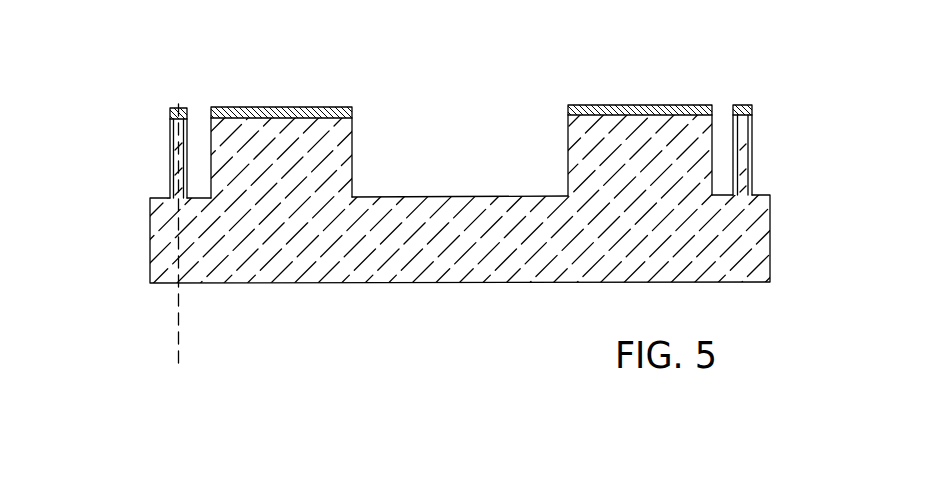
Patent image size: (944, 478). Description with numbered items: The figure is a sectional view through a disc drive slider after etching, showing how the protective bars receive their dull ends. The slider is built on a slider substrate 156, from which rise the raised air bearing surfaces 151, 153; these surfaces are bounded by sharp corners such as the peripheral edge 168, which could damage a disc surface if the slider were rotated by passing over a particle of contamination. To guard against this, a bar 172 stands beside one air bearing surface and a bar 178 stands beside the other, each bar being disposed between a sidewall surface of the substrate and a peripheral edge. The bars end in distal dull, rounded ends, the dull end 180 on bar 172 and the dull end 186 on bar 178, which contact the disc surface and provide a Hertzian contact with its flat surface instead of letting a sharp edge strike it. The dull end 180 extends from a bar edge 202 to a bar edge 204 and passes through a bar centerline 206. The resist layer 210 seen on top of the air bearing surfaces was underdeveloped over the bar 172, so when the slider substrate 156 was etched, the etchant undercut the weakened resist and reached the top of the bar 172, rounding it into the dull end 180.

The air bearing surface 151 is at (260, 118).
The air bearing surface 153 is at (597, 115).
The slider substrate 156 is at (422, 248).
The peripheral edge 168 is at (717, 112).
The bar 172 is at (170, 175).
The bar 178 is at (752, 154).
The dull end 180 is at (170, 120).
The dull end 186 is at (753, 117).
The bar edge 202 is at (170, 158).
The bar edge 204 is at (187, 153).
The bar centerline 206 is at (180, 363).
The resist layer 210 is at (355, 110).